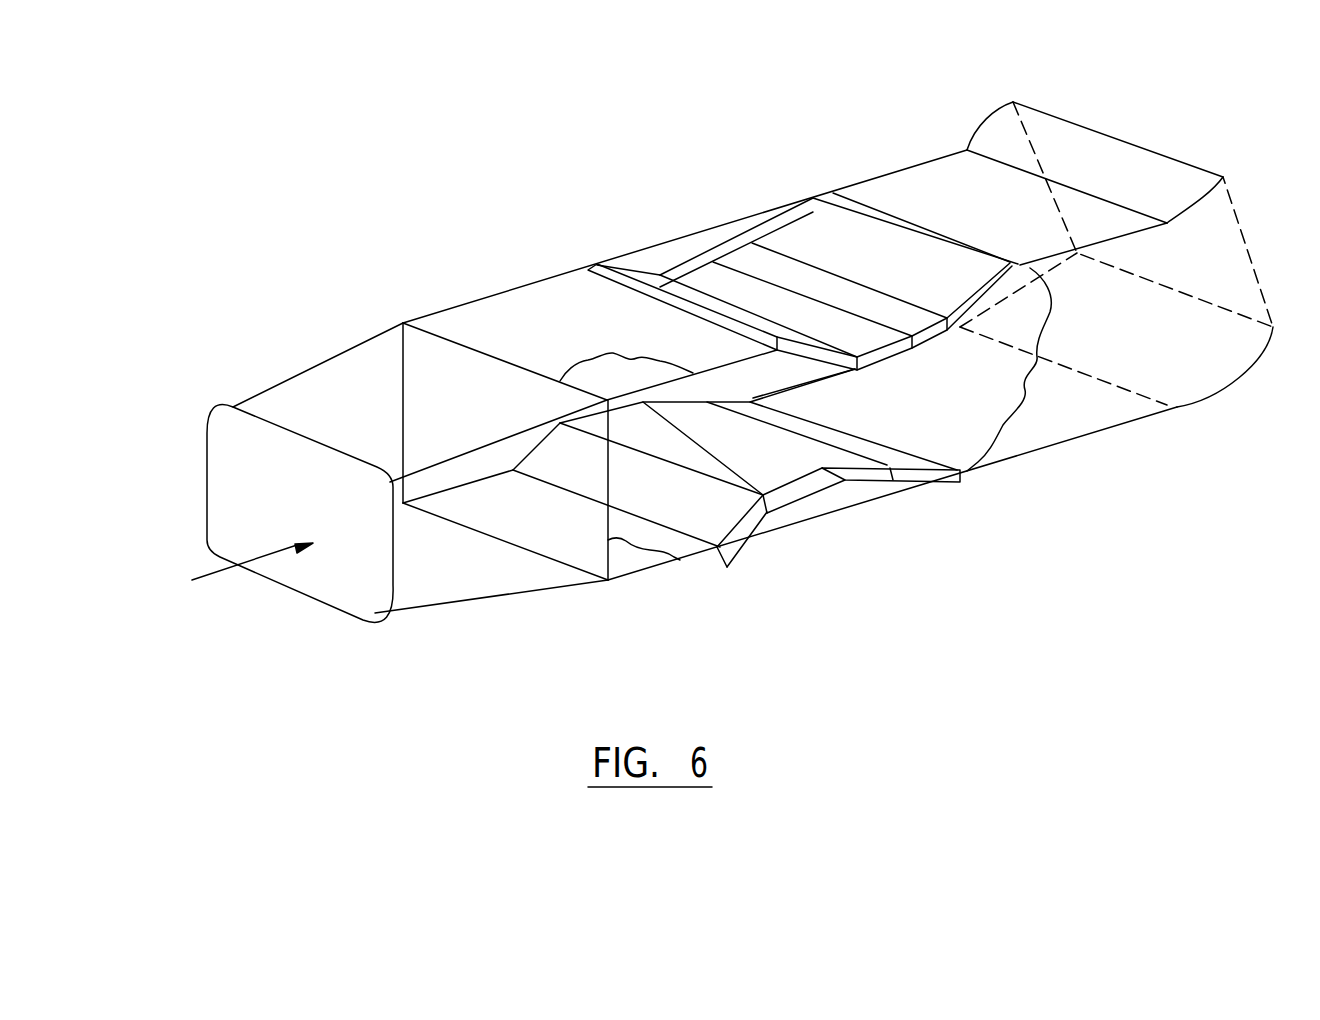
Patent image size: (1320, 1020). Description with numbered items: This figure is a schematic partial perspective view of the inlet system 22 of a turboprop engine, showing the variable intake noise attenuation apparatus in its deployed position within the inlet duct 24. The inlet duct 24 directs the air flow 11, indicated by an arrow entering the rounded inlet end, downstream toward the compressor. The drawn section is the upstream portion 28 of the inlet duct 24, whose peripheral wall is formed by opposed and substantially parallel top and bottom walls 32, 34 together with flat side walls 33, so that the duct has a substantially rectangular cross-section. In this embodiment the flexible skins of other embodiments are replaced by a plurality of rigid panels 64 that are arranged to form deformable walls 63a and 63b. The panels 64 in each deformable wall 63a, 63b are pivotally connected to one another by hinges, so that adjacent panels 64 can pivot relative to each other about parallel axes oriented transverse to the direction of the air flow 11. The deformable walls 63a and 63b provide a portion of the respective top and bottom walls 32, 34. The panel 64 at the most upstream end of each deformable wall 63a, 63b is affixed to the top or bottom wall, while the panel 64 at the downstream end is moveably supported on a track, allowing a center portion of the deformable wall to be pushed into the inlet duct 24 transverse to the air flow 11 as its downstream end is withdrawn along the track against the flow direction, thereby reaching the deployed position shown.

The air flow 11 is at (203, 573).
The inlet system 22 is at (768, 157).
The inlet duct 24 is at (897, 171).
The upstream portion 28 is at (677, 237).
The top wall 32 is at (509, 298).
The flat side walls 33 is at (392, 372).
The bottom wall 34 is at (643, 572).
The deformable wall 63a is at (587, 262).
The deformable wall 63b is at (933, 470).
The panels 64 is at (818, 230).